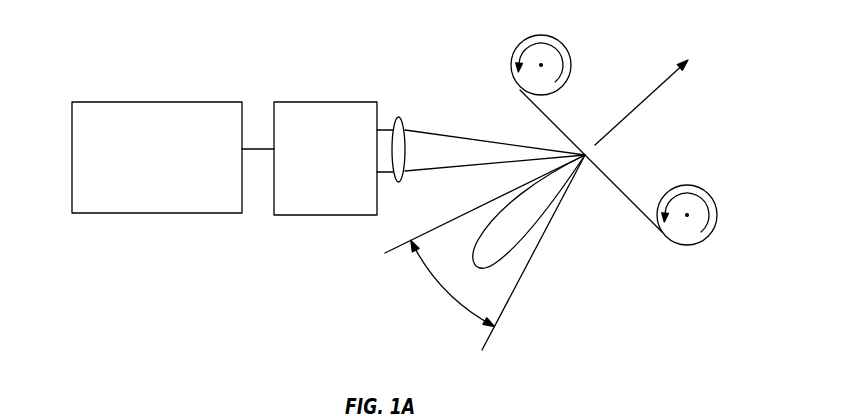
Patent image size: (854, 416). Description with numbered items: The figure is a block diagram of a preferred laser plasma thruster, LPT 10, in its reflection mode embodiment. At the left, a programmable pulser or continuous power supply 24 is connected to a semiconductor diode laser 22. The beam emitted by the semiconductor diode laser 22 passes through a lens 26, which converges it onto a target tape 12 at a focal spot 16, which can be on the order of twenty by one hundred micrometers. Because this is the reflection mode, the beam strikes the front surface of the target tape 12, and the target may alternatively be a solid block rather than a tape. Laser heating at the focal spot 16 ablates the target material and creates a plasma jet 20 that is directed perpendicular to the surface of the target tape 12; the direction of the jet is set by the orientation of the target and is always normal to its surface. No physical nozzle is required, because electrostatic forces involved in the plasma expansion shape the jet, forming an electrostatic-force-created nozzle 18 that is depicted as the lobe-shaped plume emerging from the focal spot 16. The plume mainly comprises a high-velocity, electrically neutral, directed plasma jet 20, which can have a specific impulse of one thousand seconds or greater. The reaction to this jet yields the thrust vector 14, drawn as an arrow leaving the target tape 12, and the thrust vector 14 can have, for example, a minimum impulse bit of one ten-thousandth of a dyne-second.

The LPT 10 is at (121, 48).
The target tape 12 is at (548, 116).
The thrust vector 14 is at (661, 88).
The focal spot 16 is at (593, 151).
The electrostatic-force-created nozzle 18 is at (548, 225).
The plasma jet 20 is at (460, 316).
The semiconductor diode laser 22 is at (351, 102).
The programmable pulser or continuous power supply 24 is at (219, 102).
The lens 26 is at (402, 119).